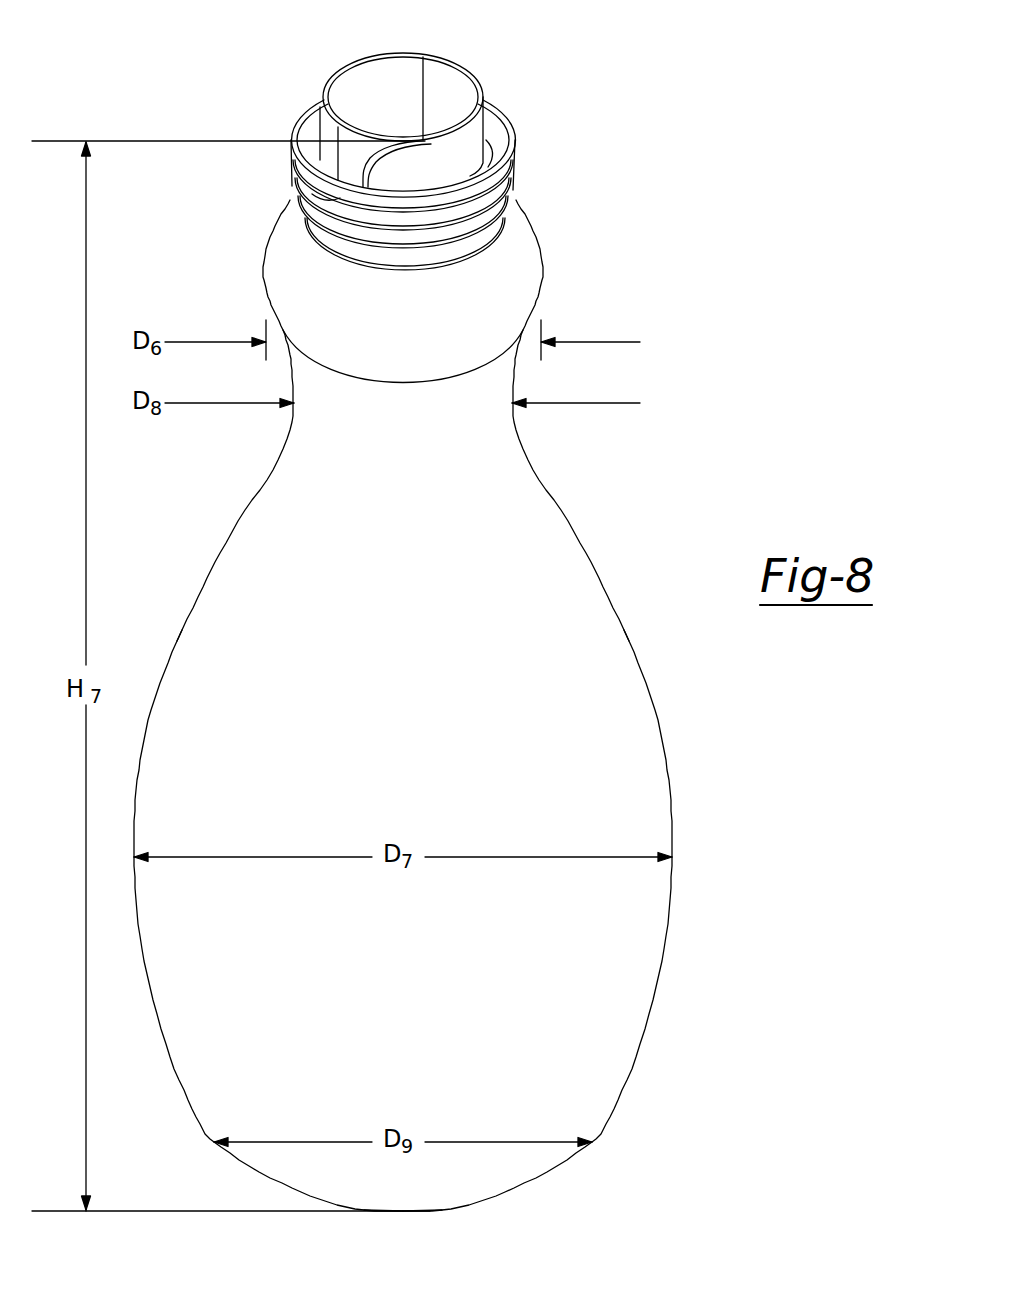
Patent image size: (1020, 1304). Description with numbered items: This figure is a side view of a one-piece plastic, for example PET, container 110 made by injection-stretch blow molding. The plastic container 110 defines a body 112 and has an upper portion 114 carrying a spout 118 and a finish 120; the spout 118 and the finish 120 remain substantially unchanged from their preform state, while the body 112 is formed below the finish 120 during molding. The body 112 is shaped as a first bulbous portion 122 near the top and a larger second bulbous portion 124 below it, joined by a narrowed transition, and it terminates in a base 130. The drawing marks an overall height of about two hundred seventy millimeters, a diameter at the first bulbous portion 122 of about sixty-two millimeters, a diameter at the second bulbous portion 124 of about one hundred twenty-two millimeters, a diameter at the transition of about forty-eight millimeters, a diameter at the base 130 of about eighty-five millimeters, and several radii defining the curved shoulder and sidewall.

The plastic container 110 is at (702, 170).
The body 112 is at (698, 260).
The upper portion 114 is at (517, 58).
The spout 118 is at (340, 64).
The finish 120 is at (547, 100).
The first bulbous portion 122 is at (528, 267).
The second bulbous portion 124 is at (657, 705).
The base 130 is at (532, 1185).